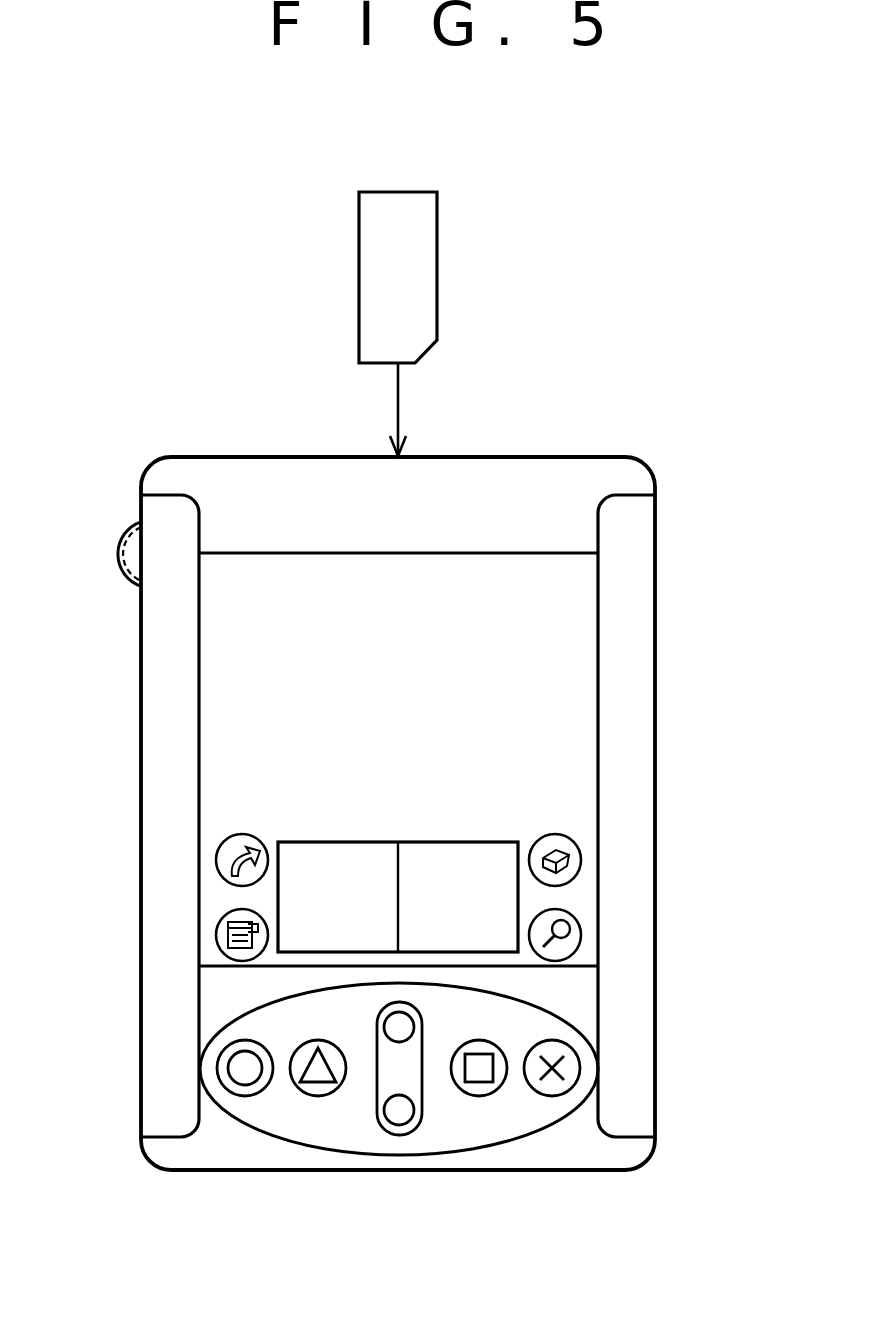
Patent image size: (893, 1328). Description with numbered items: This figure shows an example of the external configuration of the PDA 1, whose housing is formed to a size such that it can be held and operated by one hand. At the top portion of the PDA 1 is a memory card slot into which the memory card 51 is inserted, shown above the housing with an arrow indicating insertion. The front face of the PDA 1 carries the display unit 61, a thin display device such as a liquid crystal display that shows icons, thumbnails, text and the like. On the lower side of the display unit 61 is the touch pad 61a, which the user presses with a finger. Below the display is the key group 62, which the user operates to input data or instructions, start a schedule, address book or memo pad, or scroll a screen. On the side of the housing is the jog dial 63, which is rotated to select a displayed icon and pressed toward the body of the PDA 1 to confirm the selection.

The PDA 1 is at (575, 457).
The memory card 51 is at (437, 273).
The display unit 61 is at (562, 711).
The touch pad 61a is at (490, 900).
The key group 62 is at (286, 1142).
The jog dial 63 is at (118, 551).